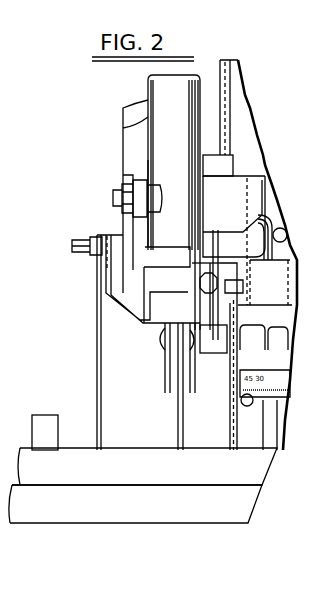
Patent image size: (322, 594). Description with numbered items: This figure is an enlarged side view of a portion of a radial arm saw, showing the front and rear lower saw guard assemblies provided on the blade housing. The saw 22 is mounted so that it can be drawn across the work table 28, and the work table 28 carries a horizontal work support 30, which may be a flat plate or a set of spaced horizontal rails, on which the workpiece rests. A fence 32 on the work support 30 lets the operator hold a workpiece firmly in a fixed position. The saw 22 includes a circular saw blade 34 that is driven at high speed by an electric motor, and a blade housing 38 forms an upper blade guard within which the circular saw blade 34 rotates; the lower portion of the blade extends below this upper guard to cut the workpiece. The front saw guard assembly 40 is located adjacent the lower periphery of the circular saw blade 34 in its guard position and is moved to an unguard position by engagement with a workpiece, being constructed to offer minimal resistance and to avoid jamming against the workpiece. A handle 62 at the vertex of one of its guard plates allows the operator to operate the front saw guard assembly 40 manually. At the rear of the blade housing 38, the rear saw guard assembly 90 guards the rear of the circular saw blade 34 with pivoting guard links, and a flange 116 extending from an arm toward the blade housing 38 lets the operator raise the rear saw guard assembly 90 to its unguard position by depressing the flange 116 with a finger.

The blade housing 38 is at (162, 85).
The saw 22 is at (112, 140).
The handle 62 is at (77, 243).
The flange 116 is at (230, 260).
The front saw guard assembly 40 is at (90, 351).
The fence 32 is at (50, 430).
The circular saw blade 34 is at (178, 425).
The rear saw guard assembly 90 is at (226, 424).
The work table 28 is at (115, 500).
The work support 30 is at (182, 470).